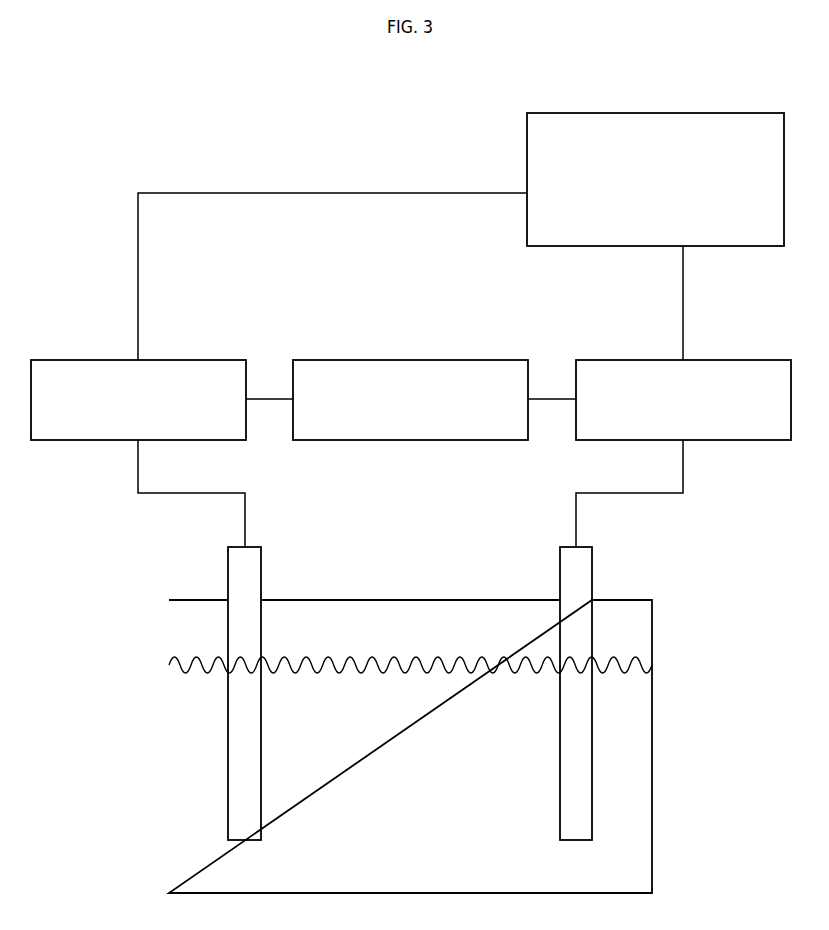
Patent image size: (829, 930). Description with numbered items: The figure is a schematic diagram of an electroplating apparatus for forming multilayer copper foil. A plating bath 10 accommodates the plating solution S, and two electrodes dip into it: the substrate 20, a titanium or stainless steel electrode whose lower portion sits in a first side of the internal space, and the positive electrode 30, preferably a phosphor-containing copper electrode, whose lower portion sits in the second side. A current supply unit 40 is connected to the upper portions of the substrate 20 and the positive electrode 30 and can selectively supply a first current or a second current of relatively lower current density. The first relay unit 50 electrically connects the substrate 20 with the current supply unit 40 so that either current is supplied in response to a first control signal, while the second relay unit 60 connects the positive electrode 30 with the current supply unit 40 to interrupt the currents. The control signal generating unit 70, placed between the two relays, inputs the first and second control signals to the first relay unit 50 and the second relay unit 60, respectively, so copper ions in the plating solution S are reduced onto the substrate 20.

The plating bath 10 is at (651, 798).
The substrate 20 is at (572, 585).
The positive electrode 30 is at (247, 583).
The current supply unit 40 is at (682, 113).
The first relay unit 50 is at (743, 360).
The second relay unit 60 is at (200, 360).
The control signal generating unit 70 is at (415, 360).
The plating solution S is at (633, 733).